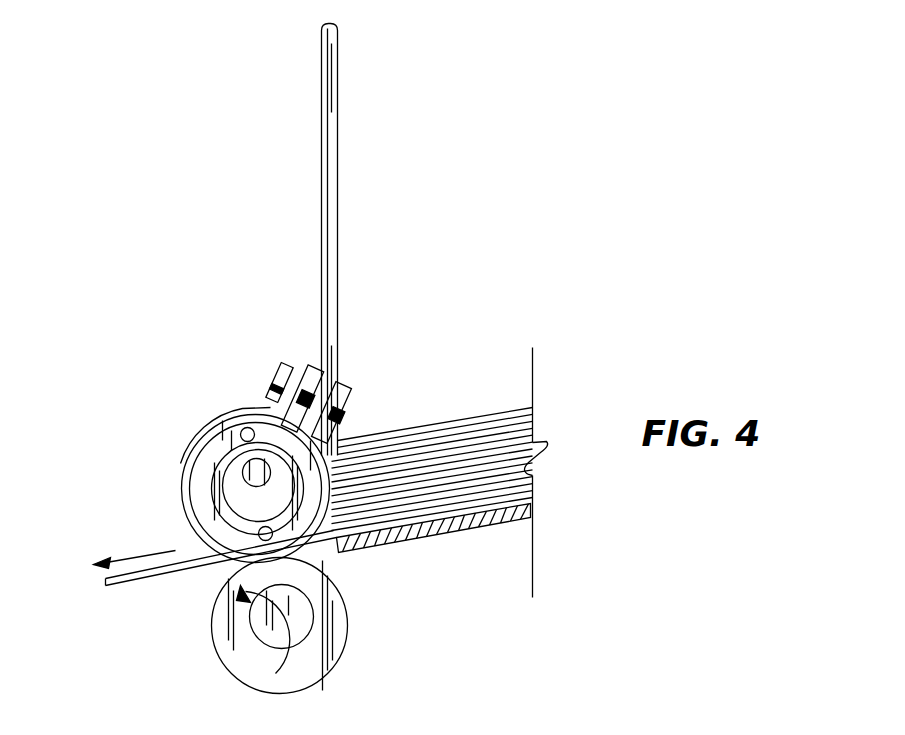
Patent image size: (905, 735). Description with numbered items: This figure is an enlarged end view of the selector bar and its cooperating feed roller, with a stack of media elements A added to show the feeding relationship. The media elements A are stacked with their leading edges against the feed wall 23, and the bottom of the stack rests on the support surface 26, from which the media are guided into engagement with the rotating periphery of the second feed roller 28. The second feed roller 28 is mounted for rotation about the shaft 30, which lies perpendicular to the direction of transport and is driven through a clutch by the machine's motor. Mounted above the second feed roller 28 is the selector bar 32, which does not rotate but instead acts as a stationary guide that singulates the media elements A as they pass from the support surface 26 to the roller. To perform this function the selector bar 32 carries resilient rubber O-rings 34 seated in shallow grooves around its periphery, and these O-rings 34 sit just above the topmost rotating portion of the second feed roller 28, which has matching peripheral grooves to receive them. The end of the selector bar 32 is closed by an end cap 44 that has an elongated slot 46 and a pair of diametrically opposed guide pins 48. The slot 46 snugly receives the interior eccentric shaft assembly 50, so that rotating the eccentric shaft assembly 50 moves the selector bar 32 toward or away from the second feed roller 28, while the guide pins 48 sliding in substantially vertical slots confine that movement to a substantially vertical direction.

The feed wall 23 is at (337, 144).
The media elements A is at (420, 426).
The support surface 26 is at (423, 533).
The second feed roller 28 is at (349, 622).
The shaft 30 is at (265, 638).
The selector bar 32 is at (180, 459).
The O-rings 34 is at (188, 505).
The end cap 44 is at (225, 440).
The elongated slot 46 is at (217, 488).
The guide pins 48 is at (247, 427).
The eccentric shaft assembly 50 is at (283, 526).